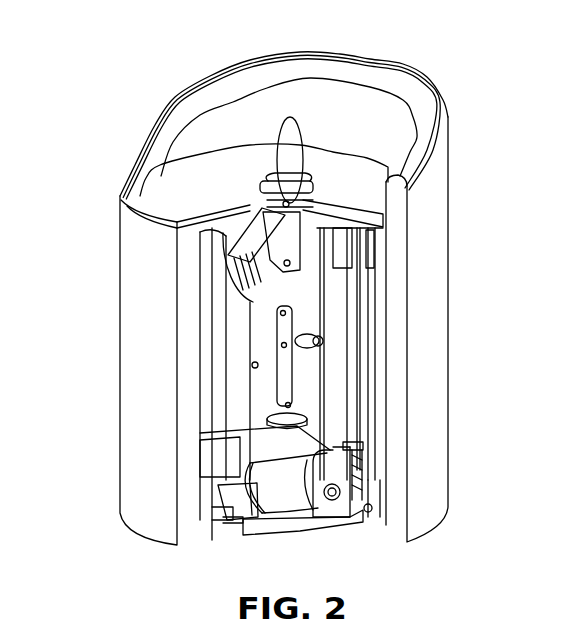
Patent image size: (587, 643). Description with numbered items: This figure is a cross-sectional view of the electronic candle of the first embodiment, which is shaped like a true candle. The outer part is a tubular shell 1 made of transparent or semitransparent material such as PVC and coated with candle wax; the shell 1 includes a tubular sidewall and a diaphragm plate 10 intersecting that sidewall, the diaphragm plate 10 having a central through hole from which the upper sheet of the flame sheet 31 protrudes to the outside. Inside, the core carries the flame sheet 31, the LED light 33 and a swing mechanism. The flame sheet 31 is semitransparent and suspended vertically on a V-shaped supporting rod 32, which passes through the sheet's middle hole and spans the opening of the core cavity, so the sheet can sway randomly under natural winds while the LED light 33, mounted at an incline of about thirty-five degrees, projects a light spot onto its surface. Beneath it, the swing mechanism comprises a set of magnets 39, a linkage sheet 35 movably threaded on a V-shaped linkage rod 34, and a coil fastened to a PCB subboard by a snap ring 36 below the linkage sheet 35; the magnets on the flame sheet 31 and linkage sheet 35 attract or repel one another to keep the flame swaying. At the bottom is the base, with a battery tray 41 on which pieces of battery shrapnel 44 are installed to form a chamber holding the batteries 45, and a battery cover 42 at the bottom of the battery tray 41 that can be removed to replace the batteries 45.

The shell 1 is at (450, 183).
The diaphragm plate 10 is at (161, 176).
The flame sheet 31 is at (293, 147).
The supporting rod 32 is at (222, 160).
The LED light 33 is at (140, 196).
The linkage rod 34 is at (278, 343).
The linkage sheet 35 is at (277, 320).
The snap ring 36 is at (280, 420).
The set of magnets 39 is at (322, 397).
The battery tray 41 is at (223, 453).
The battery cover 42 is at (233, 498).
The battery shrapnel 44 is at (350, 478).
The batteries 45 is at (335, 427).